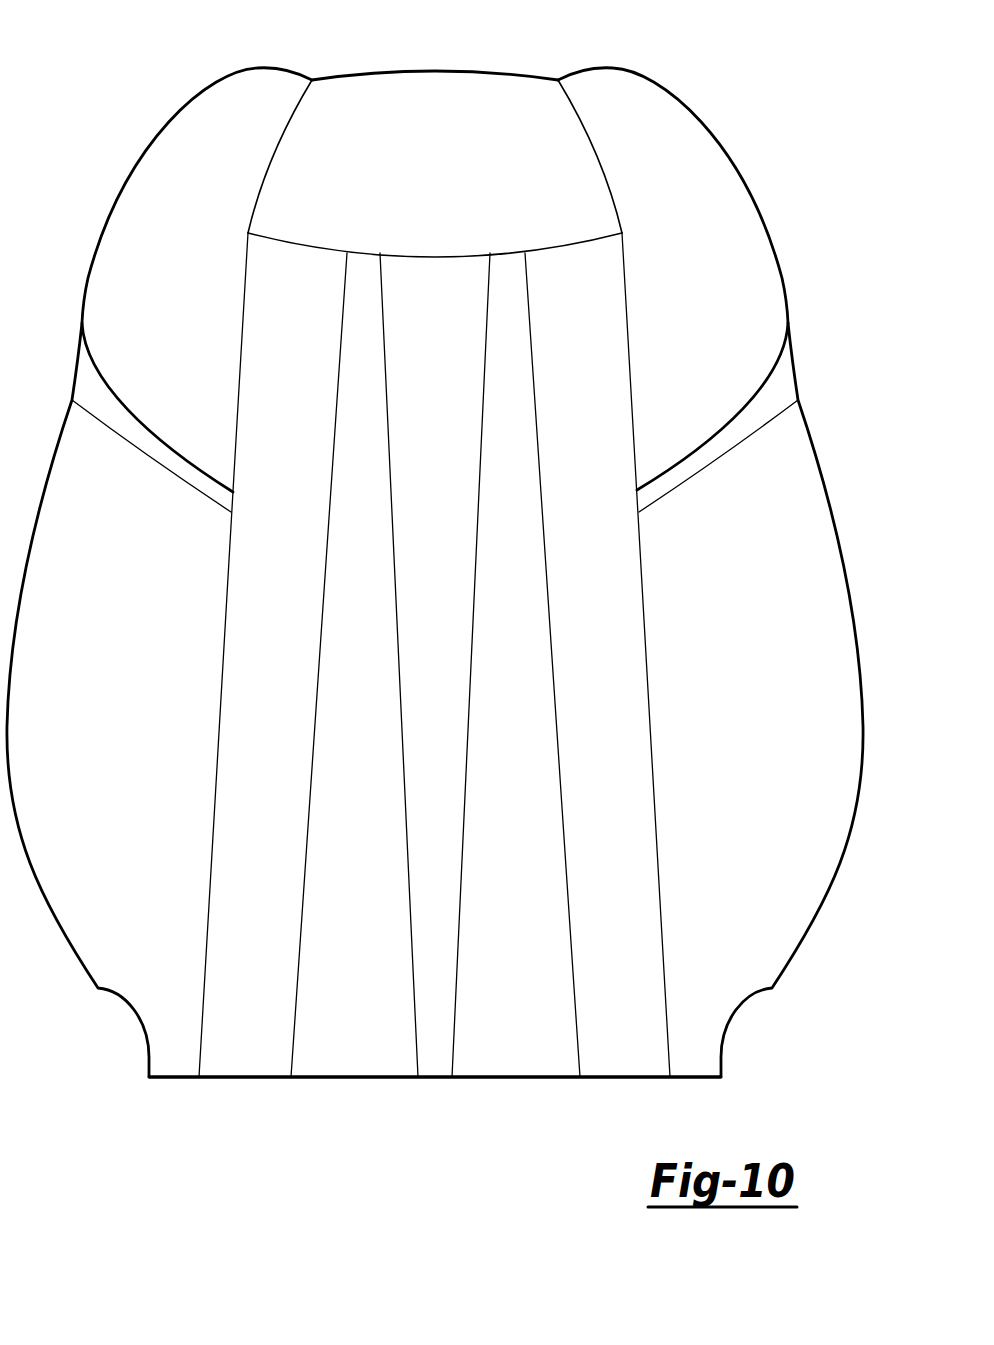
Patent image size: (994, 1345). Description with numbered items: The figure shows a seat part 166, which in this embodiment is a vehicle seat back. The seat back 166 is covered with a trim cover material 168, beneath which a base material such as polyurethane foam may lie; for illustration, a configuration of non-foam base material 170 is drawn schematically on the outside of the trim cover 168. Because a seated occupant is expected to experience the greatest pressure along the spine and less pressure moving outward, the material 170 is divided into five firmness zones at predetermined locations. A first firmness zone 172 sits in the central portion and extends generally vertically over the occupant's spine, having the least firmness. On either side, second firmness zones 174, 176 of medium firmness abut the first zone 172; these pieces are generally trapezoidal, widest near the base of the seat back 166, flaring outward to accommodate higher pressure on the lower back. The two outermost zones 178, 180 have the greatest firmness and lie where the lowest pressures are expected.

The seat part 166 is at (748, 78).
The trim cover material 168 is at (208, 78).
The non-foam base material 170 is at (233, 1107).
The first firmness zone 172 is at (433, 1080).
The second firmness zone 174 is at (352, 1050).
The second firmness zone 176 is at (515, 1050).
The outermost firmness zone 178 is at (260, 660).
The outermost firmness zone 180 is at (610, 660).